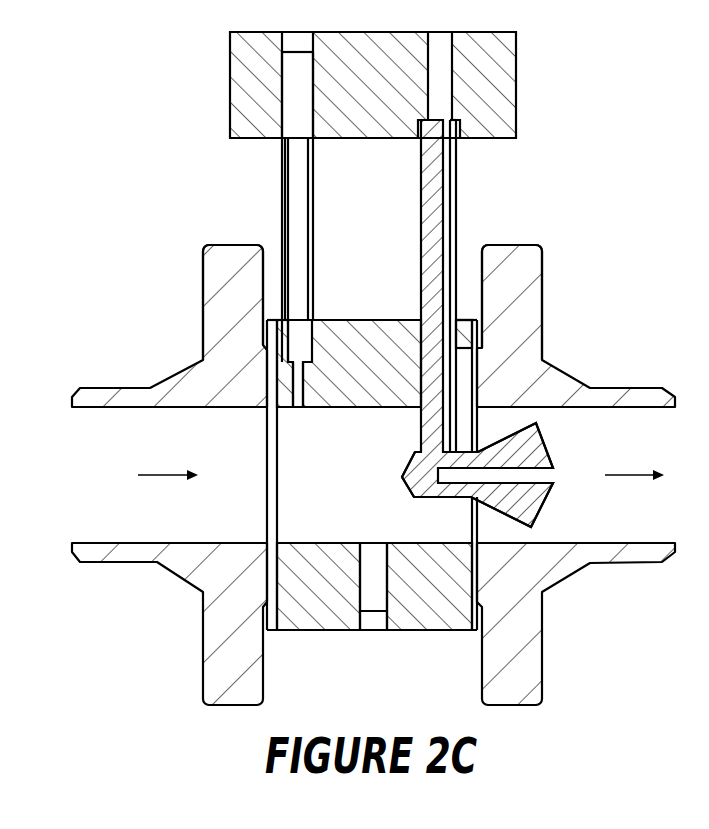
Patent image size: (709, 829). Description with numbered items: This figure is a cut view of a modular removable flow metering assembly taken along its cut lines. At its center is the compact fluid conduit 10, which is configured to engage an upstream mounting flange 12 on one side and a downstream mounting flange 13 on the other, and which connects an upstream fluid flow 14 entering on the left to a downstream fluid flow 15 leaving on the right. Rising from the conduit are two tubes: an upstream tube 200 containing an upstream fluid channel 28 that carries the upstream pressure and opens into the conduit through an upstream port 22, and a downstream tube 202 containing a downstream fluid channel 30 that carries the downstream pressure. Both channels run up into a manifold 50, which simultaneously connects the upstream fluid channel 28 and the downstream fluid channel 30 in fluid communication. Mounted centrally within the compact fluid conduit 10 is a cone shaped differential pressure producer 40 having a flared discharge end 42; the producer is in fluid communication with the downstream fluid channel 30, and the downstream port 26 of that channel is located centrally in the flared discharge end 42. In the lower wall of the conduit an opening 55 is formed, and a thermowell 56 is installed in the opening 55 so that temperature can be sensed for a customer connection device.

The compact fluid conduit 10 is at (427, 631).
The upstream mounting flange 12 is at (232, 245).
The downstream mounting flange 13 is at (512, 245).
The upstream fluid flow 14 is at (167, 473).
The downstream fluid flow 15 is at (636, 473).
The upstream port 22 is at (297, 404).
The downstream port 26 is at (553, 475).
The upstream fluid channel 28 is at (282, 172).
The downstream fluid channel 30 is at (450, 172).
The cone shaped differential pressure producer 40 is at (525, 430).
The flared discharge end 42 is at (553, 492).
The manifold 50 is at (517, 82).
The opening 55 is at (373, 624).
The thermowell 56 is at (378, 556).
The upstream tube 200 is at (282, 198).
The downstream tube 202 is at (457, 198).